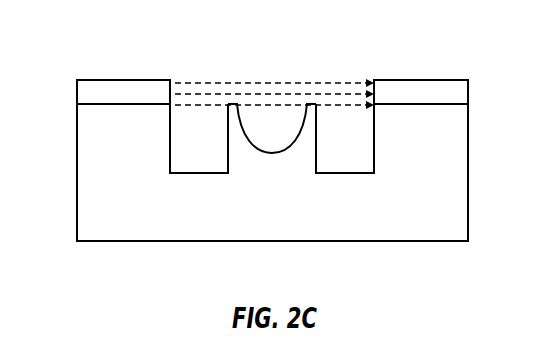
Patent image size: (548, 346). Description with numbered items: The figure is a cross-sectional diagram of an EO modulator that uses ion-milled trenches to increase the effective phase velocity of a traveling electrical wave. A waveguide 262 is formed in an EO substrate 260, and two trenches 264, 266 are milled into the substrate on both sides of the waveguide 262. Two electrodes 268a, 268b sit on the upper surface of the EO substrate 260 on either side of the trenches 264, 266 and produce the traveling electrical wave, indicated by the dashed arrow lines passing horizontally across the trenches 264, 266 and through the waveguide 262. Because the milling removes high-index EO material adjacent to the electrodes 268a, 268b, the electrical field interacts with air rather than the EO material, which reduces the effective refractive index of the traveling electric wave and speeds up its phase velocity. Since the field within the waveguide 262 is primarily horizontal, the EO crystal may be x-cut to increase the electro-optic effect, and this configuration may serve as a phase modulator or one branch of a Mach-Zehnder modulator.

The EO substrate 260 is at (457, 235).
The waveguide 262 is at (273, 155).
The trench 264 is at (217, 160).
The trench 266 is at (363, 162).
The electrode 268a is at (120, 79).
The electrode 268b is at (420, 79).